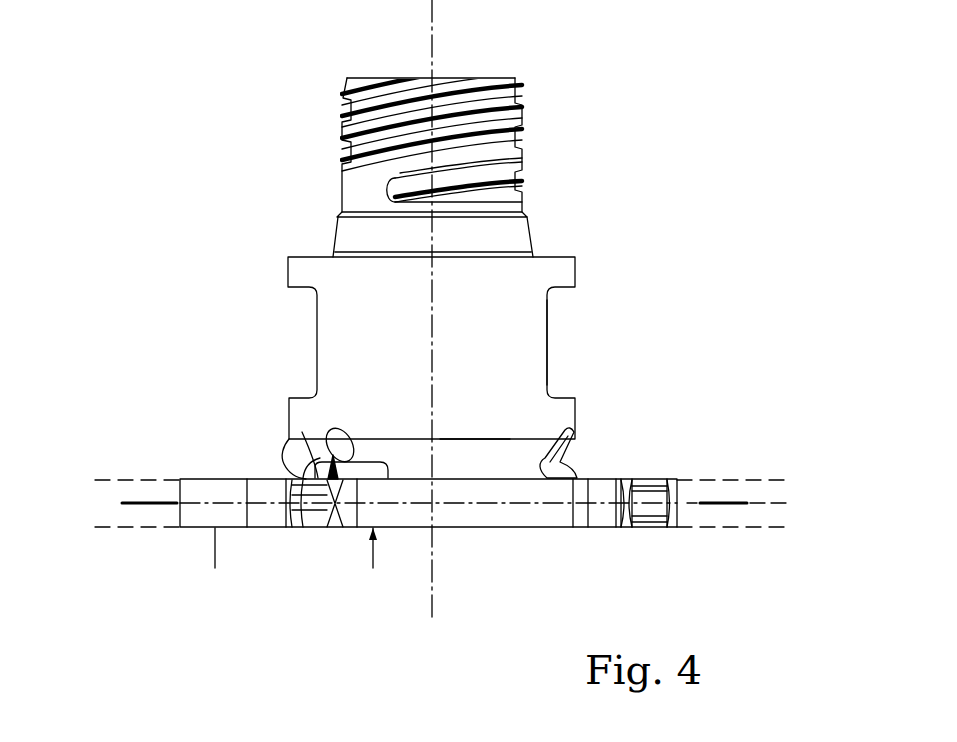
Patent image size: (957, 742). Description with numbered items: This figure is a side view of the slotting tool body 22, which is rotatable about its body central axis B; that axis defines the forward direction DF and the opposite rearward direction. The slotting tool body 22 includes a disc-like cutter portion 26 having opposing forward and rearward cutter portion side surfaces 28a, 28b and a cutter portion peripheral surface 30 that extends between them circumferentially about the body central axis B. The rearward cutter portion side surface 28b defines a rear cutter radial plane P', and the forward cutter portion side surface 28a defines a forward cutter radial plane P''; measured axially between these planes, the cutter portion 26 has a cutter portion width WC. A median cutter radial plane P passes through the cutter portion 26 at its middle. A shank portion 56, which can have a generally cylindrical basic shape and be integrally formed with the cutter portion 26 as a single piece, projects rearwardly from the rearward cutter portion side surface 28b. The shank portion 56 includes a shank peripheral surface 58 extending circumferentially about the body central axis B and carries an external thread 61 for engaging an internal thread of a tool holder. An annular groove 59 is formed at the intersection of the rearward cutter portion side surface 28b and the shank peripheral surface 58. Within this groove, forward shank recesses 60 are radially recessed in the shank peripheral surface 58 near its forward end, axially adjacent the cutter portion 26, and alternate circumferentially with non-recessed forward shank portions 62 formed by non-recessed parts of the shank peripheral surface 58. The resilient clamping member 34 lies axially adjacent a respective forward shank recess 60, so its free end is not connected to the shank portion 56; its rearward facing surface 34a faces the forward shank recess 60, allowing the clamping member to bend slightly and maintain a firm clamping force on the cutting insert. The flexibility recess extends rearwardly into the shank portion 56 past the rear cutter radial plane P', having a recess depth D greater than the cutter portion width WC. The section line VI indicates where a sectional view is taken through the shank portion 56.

The slotting tool body 22 is at (637, 218).
The external thread 61 is at (557, 153).
The shank portion 56 is at (262, 250).
The shank peripheral surface 58 is at (520, 320).
The annular groove 59 is at (283, 460).
The rearward facing surface 34a is at (302, 432).
The forward shank recess 60 is at (333, 455).
The recess depth D is at (373, 453).
The non-recessed forward shank portion 62 is at (474, 464).
The cutter portion 26 is at (428, 523).
The cutter portion peripheral surface 30 is at (512, 513).
The resilient clamping member 34 is at (313, 528).
The forward cutter portion side surface 28a is at (562, 528).
The rearward cutter portion side surface 28b is at (605, 478).
The cutter portion width WC is at (215, 479).
The median cutter radial plane P is at (475, 528).
The rear cutter radial plane P' is at (458, 462).
The forward cutter radial plane P'' is at (453, 558).
The section line VI is at (723, 504).
The body central axis B is at (432, 366).
The forward direction DF is at (412, 555).